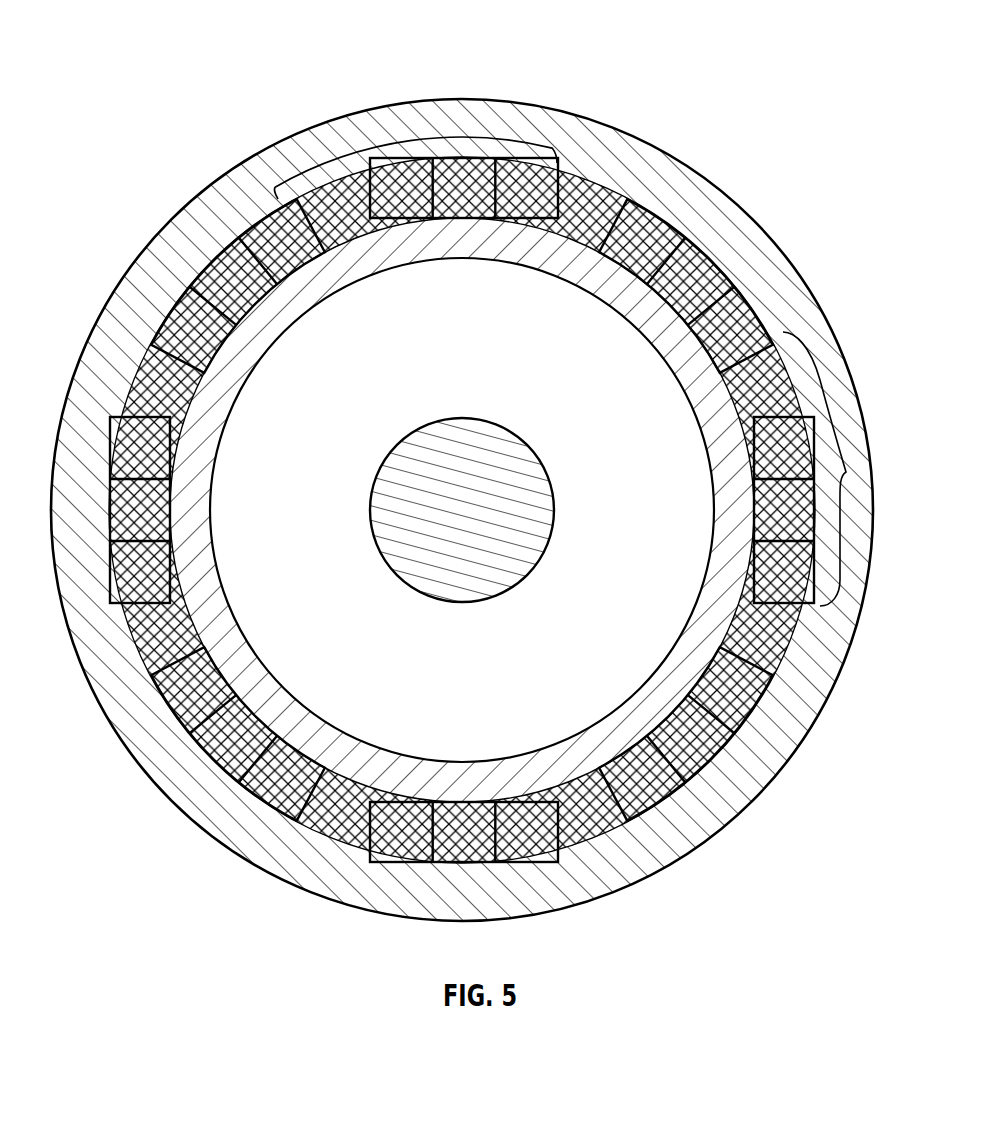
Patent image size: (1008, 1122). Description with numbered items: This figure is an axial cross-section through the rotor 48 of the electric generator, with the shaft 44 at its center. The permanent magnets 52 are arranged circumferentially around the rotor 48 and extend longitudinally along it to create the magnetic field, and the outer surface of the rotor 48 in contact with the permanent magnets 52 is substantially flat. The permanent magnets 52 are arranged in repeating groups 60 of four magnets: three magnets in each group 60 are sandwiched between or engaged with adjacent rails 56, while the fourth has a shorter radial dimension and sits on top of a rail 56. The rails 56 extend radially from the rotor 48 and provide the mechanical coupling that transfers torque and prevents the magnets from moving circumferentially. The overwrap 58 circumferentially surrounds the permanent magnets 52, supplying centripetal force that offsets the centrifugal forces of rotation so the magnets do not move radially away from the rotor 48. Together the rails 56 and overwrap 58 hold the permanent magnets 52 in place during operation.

The shaft 44 is at (397, 560).
The rotor 48 is at (187, 583).
The permanent magnets 52 is at (183, 323).
The rails 56 is at (343, 223).
The overwrap 58 is at (190, 234).
The groups 60 is at (421, 136).